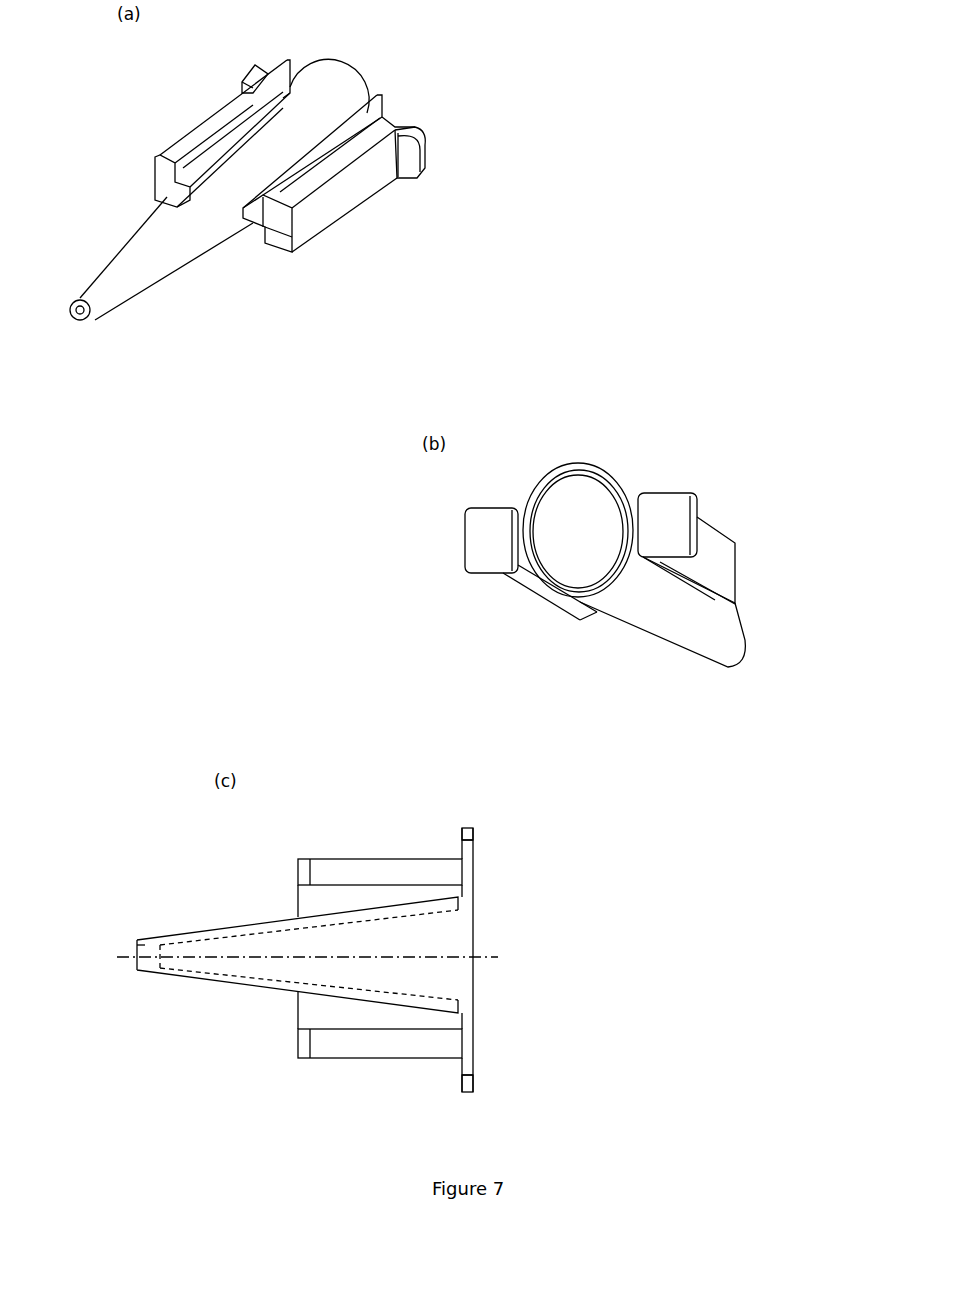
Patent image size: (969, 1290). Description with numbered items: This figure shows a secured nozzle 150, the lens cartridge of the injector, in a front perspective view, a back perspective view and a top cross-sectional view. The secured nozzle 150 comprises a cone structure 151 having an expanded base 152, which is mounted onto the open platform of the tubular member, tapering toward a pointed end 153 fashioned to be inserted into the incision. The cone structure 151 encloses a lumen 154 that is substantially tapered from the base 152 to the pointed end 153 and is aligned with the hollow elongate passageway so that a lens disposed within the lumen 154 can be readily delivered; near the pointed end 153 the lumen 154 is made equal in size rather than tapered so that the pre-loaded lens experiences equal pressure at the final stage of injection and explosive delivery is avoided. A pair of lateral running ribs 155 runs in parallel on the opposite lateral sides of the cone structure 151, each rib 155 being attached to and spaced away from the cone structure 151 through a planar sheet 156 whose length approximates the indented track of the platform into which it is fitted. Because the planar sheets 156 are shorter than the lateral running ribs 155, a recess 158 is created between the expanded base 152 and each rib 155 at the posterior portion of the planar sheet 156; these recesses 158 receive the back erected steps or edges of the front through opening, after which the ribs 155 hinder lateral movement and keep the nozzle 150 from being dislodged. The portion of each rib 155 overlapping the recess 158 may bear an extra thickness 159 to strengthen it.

The secured nozzle 150 is at (599, 138).
The cone structure 151 is at (227, 927).
The expanded base 152 is at (340, 90).
The pointed end 153 is at (102, 295).
The lumen 154 is at (237, 967).
The lateral running ribs 155 is at (102, 215).
The planar sheet 156 is at (340, 895).
The recess 158 is at (470, 1015).
The extra thickness 159 is at (410, 155).